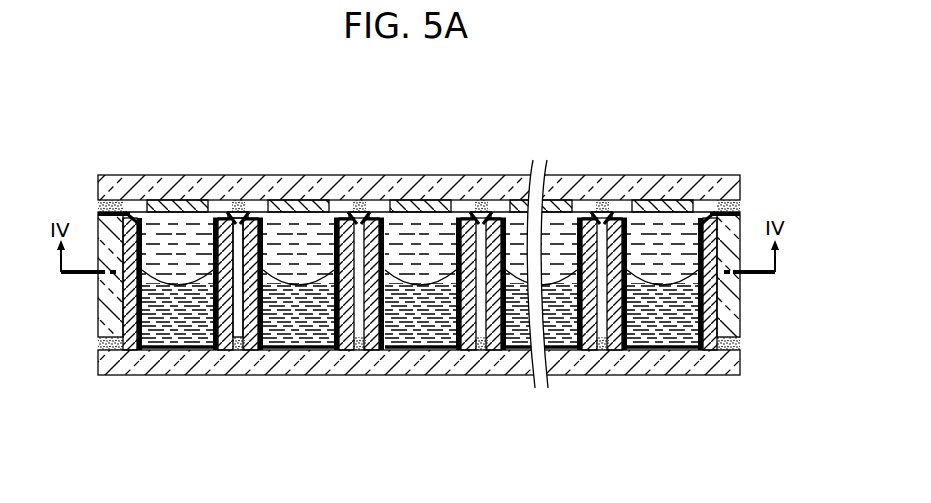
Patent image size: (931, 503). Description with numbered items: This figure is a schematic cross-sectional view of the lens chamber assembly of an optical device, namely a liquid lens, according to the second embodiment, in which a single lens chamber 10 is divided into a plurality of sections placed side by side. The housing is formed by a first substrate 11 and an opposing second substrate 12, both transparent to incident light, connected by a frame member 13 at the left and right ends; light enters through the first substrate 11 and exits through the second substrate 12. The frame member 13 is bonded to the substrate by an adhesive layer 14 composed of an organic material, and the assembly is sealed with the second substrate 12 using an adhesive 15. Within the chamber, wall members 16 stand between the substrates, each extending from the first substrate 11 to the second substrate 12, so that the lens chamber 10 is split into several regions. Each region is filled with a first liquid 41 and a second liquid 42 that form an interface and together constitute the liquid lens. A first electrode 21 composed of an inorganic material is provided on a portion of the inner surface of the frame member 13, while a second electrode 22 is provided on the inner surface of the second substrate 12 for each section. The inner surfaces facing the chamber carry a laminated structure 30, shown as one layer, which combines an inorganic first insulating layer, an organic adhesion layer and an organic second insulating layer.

The lens chamber 10 is at (296, 213).
The first substrate 11 is at (655, 368).
The second substrate 12 is at (661, 183).
The frame member 13 is at (108, 307).
The adhesive layer 14 is at (108, 352).
The adhesive 15 is at (113, 200).
The wall member 16 is at (228, 352).
The first electrode 21 is at (122, 338).
The second electrode 22 is at (188, 207).
The laminated structure 30 is at (141, 243).
The first liquid 41 is at (407, 328).
The second liquid 42 is at (421, 238).